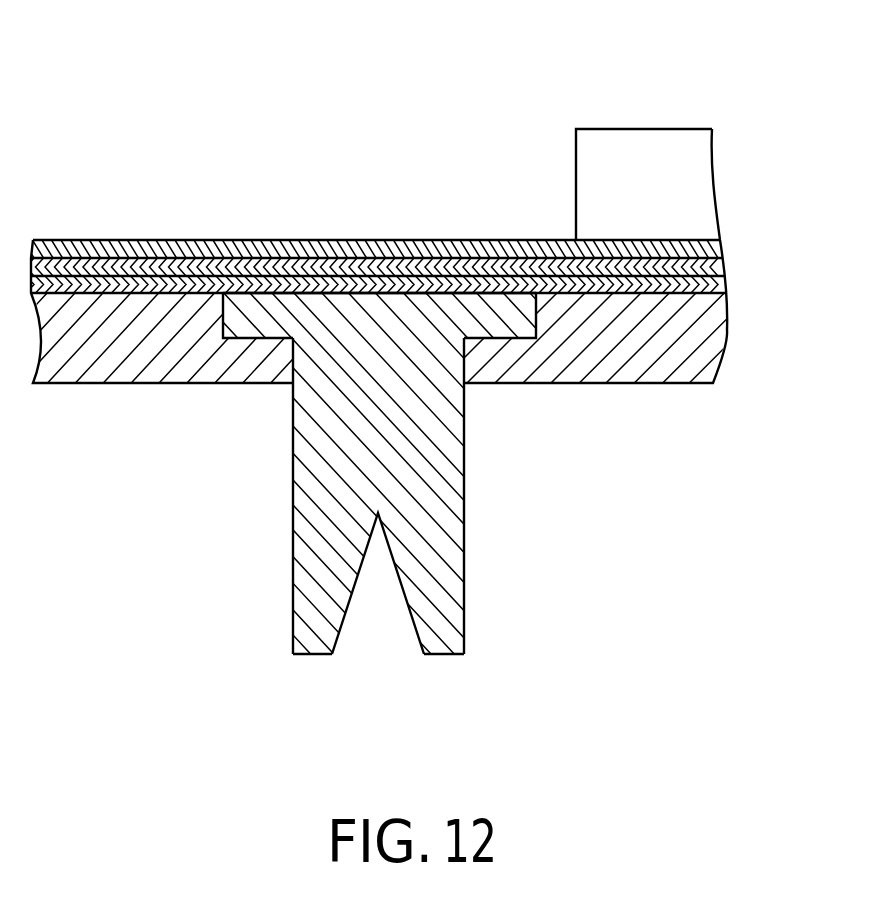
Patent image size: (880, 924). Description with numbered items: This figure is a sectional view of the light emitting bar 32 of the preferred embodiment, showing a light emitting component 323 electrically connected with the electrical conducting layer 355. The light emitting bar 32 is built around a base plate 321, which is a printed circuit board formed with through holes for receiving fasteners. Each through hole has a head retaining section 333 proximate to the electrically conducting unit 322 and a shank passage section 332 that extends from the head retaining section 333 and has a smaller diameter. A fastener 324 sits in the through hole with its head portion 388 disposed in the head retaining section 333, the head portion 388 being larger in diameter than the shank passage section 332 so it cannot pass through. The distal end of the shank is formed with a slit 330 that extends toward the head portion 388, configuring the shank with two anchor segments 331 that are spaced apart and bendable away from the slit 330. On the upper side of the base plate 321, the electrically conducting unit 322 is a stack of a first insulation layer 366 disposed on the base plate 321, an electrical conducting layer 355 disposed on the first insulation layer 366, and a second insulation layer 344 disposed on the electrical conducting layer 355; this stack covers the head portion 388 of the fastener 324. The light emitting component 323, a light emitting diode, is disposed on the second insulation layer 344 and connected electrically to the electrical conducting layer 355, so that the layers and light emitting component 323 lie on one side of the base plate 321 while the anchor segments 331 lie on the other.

The light emitting bar 32 is at (432, 373).
The base plate 321 is at (677, 372).
The electrically conducting unit 322 is at (375, 198).
The light emitting component 323 is at (645, 129).
The fastener 324 is at (432, 462).
The slit 330 is at (348, 603).
The anchor segments 331 is at (313, 643).
The shank passage section 332 is at (464, 358).
The head retaining section 333 is at (513, 292).
The second insulation layer 344 is at (375, 242).
The electrical conducting layer 355 is at (205, 283).
The first insulation layer 366 is at (285, 268).
The head portion 388 is at (245, 330).